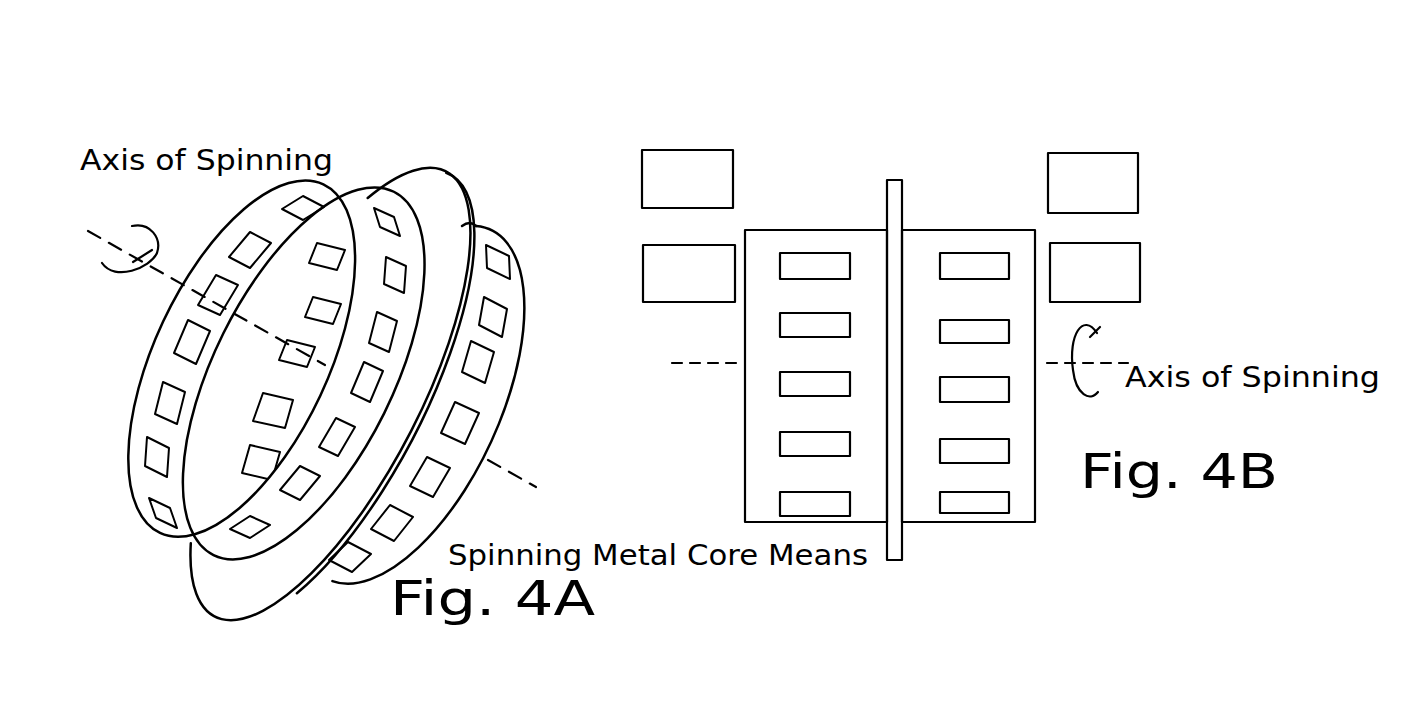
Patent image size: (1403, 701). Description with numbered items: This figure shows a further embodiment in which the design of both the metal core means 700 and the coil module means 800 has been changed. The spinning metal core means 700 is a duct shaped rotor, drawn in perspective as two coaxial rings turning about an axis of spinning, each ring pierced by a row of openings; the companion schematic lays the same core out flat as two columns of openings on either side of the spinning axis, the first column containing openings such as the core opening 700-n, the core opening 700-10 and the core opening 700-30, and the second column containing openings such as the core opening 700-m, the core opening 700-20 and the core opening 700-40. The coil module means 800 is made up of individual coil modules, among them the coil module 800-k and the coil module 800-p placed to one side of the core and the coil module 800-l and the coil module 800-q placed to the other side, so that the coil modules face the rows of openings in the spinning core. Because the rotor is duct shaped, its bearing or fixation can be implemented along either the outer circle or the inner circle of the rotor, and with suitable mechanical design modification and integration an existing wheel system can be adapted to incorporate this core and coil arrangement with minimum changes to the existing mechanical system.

In FIG. 4A, the metal core means 700 is at (410, 193).
In FIG. 4B, the metal core means 700 is at (823, 369).
In FIG. 4B, the coil module means 800 is at (839, 184).
In FIG. 4B, the coil module 800-k is at (698, 193).
In FIG. 4B, the coil module 800-p is at (712, 285).
In FIG. 4B, the coil module 800-l is at (1085, 172).
In FIG. 4B, the coil module 800-q is at (1138, 291).
In FIG. 4B, the core opening 700-n is at (818, 310).
In FIG. 4B, the core opening 700-10 is at (822, 428).
In FIG. 4B, the core opening 700-30 is at (828, 489).
In FIG. 4B, the core opening 700-m is at (976, 313).
In FIG. 4B, the core opening 700-20 is at (975, 435).
In FIG. 4B, the core opening 700-40 is at (975, 488).